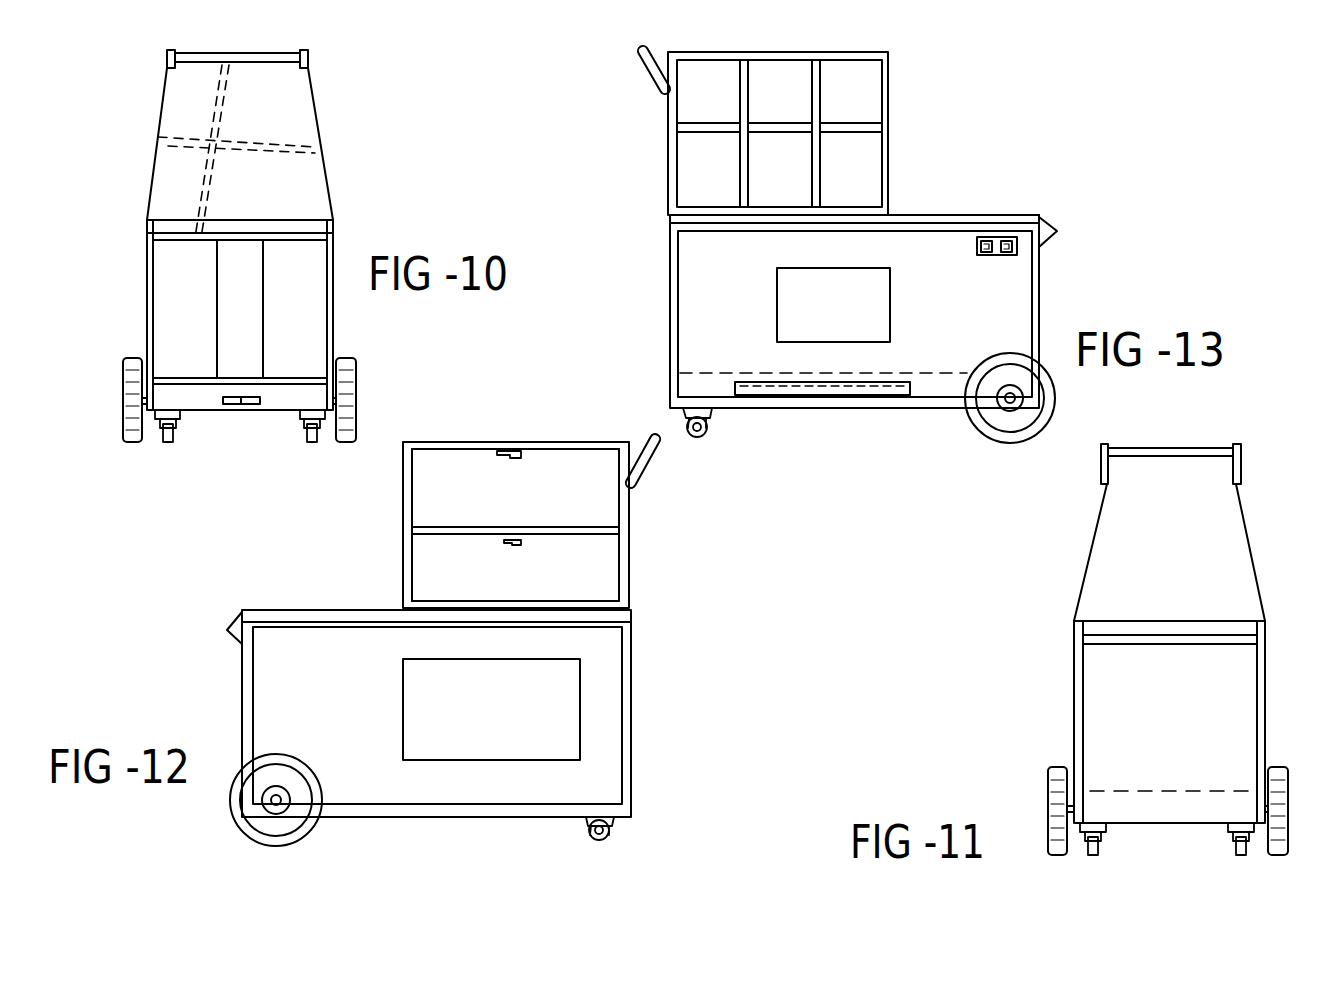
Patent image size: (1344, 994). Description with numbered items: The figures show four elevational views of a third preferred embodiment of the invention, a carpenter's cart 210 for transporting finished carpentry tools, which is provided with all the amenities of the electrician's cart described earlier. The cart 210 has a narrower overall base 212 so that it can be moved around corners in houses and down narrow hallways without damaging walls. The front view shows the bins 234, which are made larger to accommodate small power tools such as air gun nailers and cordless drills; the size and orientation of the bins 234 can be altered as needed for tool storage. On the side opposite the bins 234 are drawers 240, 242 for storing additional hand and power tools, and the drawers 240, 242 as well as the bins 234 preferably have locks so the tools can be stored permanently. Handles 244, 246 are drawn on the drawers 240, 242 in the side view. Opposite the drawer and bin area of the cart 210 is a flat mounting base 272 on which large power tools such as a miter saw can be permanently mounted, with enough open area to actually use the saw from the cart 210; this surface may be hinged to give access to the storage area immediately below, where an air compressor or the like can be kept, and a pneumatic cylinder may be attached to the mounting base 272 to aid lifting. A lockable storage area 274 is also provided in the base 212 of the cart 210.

In FIG. 13, the carpenter's cart 210 is at (610, 148).
In FIG. 10, the base 212 is at (204, 412).
In FIG. 10, the bins 234 is at (163, 110).
In FIG. 13, the bins 234 is at (888, 89).
In FIG. 12, the drawer 240 is at (611, 513).
In FIG. 12, the drawer 242 is at (612, 586).
In FIG. 12, the upper drawer handle 244 is at (501, 453).
In FIG. 12, the lower drawer handle 246 is at (508, 546).
In FIG. 13, the flat mounting base 272 is at (930, 221).
In FIG. 13, the lockable storage area 274 is at (829, 394).
In FIG. 11, the lockable storage area 274 is at (1106, 804).